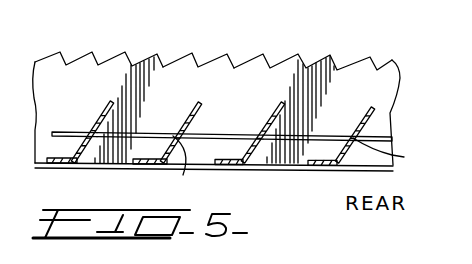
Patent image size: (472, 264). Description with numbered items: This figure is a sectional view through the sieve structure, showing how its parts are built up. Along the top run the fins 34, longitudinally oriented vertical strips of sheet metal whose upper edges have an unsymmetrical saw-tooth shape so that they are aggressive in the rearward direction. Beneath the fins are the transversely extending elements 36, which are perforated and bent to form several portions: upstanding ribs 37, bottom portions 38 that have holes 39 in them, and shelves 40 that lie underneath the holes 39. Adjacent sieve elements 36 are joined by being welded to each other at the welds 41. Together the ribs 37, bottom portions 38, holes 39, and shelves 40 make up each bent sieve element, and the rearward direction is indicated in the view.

The fins 34 is at (68, 61).
The transversely extending elements 36 is at (235, 80).
The ribs 37 is at (198, 104).
The bottom portions 38 is at (115, 133).
The holes 39 is at (70, 132).
The shelves 40 is at (132, 165).
The weld 41 is at (196, 134).